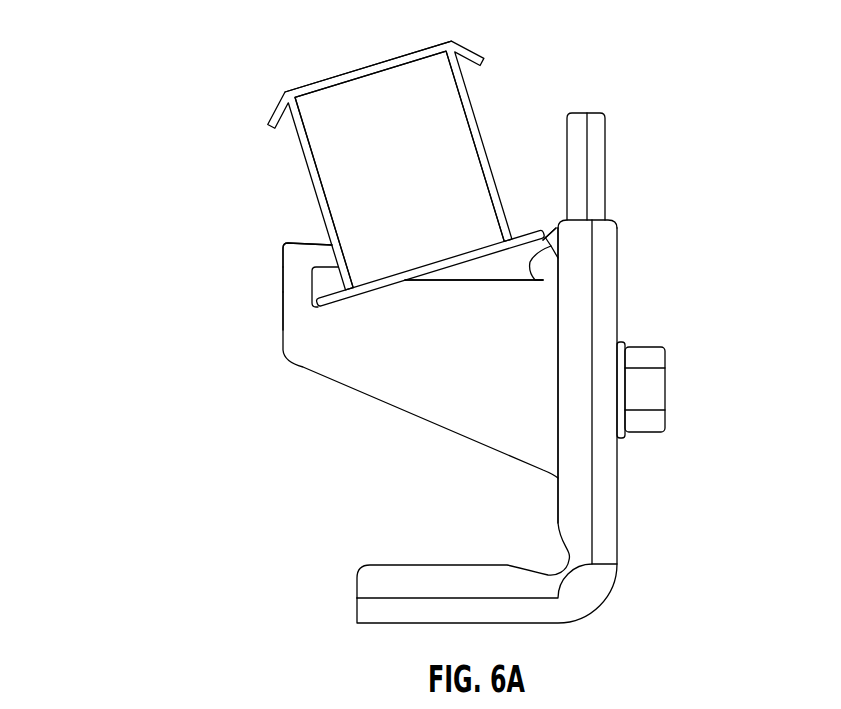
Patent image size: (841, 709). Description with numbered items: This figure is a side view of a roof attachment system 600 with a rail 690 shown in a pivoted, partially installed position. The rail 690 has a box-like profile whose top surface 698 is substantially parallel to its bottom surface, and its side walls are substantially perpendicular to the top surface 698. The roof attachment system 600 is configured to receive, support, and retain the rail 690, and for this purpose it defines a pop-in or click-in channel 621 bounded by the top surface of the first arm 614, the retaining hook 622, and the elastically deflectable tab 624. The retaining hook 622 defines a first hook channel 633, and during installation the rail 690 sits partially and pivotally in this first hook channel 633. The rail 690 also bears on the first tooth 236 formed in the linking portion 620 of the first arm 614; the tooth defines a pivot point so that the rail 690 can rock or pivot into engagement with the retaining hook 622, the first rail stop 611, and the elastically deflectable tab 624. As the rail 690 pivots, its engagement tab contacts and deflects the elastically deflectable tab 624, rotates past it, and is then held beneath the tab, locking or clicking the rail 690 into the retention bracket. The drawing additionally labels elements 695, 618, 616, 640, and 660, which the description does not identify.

The roof attachment system 600 is at (177, 50).
The rail 690 is at (344, 73).
The top surface 698 is at (422, 47).
The rail channel 695 is at (428, 115).
The first tooth 236 is at (447, 283).
The linking portion 620 is at (442, 397).
The retaining hook 622 is at (300, 243).
The bracket wall upper portion 618 is at (283, 277).
The first arm 614 is at (283, 306).
The first hook channel 633 is at (312, 289).
The bracket body 616 is at (540, 372).
The channel 621 is at (526, 272).
The elastically deflectable tab 624 is at (556, 232).
The first rail stop 611 is at (550, 267).
The L-bracket 640 is at (603, 604).
The nut 660 is at (666, 391).